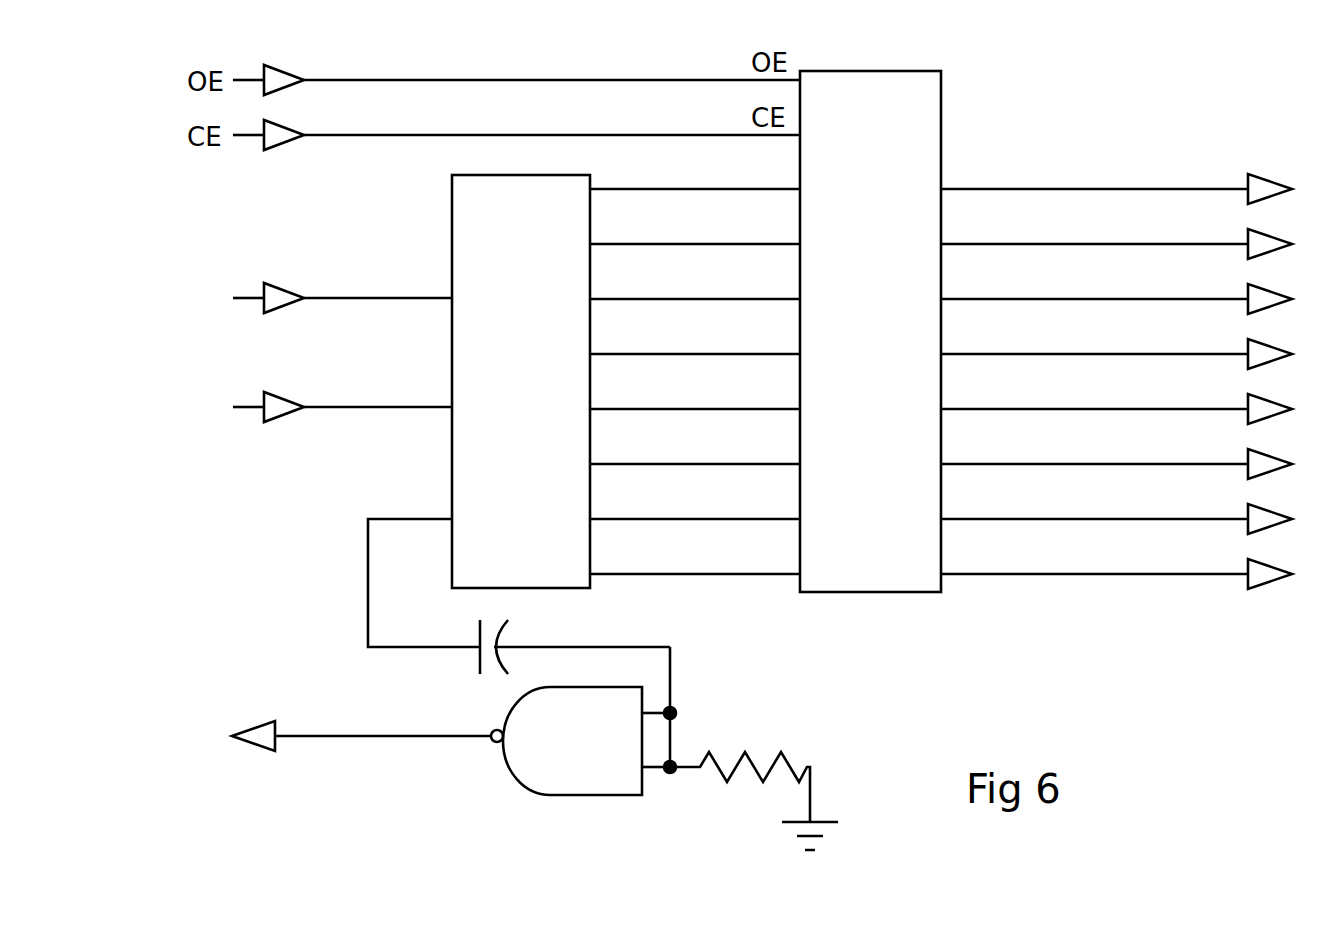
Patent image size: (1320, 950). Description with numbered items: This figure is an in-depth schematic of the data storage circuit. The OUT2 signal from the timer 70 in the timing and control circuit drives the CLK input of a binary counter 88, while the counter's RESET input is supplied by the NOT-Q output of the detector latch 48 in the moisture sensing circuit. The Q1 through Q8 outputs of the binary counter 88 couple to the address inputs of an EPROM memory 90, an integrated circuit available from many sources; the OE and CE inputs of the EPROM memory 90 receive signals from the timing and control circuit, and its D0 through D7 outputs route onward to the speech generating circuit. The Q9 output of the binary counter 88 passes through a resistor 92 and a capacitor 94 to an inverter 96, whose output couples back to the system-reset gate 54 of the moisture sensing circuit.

The binary counter 88 is at (448, 213).
The 2716 EPROM memory 90 is at (862, 67).
The resistor 92 is at (727, 757).
The capacitor 94 is at (487, 620).
The inverter 96 is at (540, 795).
The timer 70 is at (301, 307).
The detector latch 48 is at (282, 435).
The system-reset gate 54 is at (303, 779).